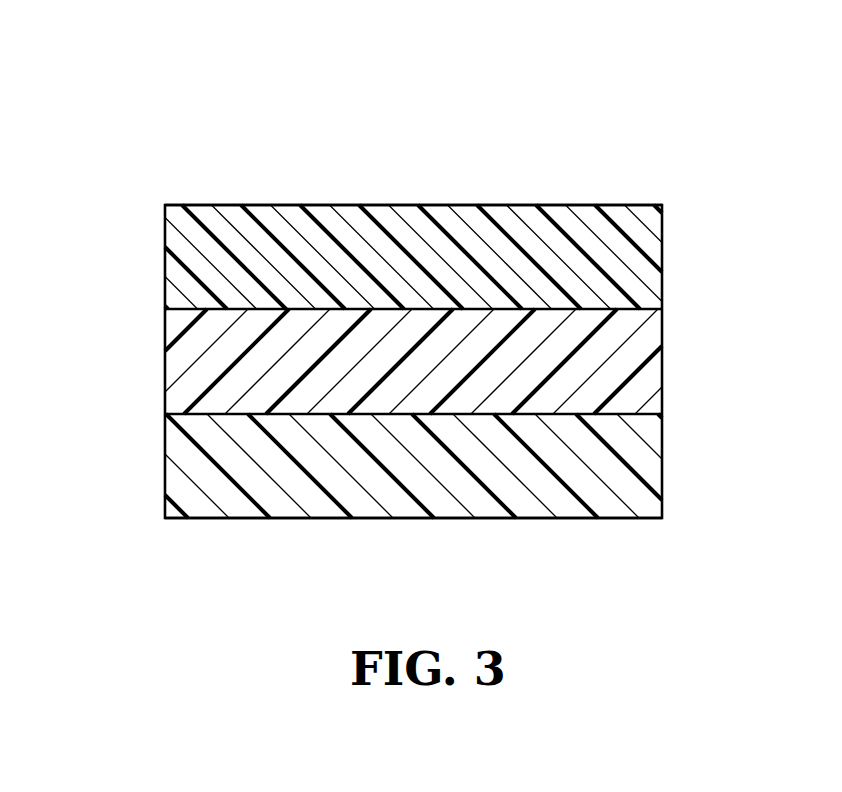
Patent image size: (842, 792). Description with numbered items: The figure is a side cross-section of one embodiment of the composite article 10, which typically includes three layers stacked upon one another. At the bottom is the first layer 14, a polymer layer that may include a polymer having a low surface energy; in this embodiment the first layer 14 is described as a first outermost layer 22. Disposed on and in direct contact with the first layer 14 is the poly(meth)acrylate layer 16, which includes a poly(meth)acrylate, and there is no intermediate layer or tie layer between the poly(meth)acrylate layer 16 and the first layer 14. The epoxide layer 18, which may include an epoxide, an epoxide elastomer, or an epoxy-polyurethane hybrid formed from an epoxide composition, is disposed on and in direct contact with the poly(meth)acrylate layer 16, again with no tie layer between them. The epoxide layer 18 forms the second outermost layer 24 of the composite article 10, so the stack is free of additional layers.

The composite article 10 is at (116, 134).
The first layer 14 is at (645, 467).
The poly(meth)acrylate layer 16 is at (652, 370).
The epoxide layer 18 is at (652, 252).
The first outermost layer 22 is at (213, 518).
The second outermost layer 24 is at (222, 204).